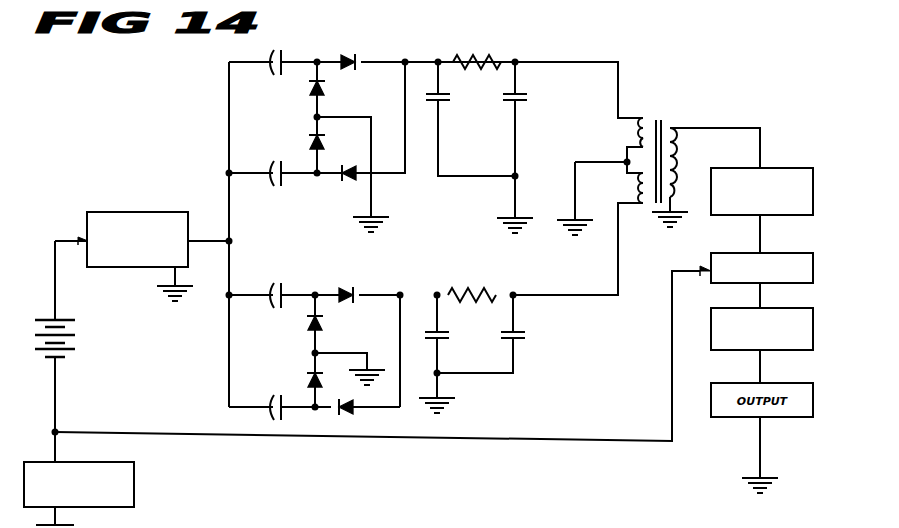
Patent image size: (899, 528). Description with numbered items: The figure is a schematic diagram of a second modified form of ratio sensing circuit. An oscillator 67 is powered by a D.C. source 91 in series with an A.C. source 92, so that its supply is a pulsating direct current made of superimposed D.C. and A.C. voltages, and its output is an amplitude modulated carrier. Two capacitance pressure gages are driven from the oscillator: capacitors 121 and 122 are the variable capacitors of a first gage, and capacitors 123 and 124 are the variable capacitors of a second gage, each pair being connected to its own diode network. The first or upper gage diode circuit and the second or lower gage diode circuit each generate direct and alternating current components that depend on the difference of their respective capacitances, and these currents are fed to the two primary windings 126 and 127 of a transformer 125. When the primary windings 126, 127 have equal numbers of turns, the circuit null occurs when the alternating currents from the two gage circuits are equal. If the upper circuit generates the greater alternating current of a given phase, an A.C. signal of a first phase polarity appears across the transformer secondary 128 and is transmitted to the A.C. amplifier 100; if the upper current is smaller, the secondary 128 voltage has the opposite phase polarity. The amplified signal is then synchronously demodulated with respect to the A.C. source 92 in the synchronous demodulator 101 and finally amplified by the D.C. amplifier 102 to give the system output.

The oscillator 67 is at (148, 210).
The D.C. source 91 is at (66, 320).
The A.C. source 92 is at (135, 483).
The A.C. amplifier 100 is at (782, 166).
The synchronous demodulator 101 is at (813, 263).
The D.C. amplifier 102 is at (813, 340).
The variable capacitor 121 is at (284, 50).
The variable capacitor 122 is at (275, 160).
The variable capacitor 123 is at (285, 283).
The variable capacitor 124 is at (276, 395).
The transformer 125 is at (663, 118).
The primary winding 126 is at (640, 205).
The primary winding 127 is at (634, 117).
The transformer secondary 128 is at (683, 128).